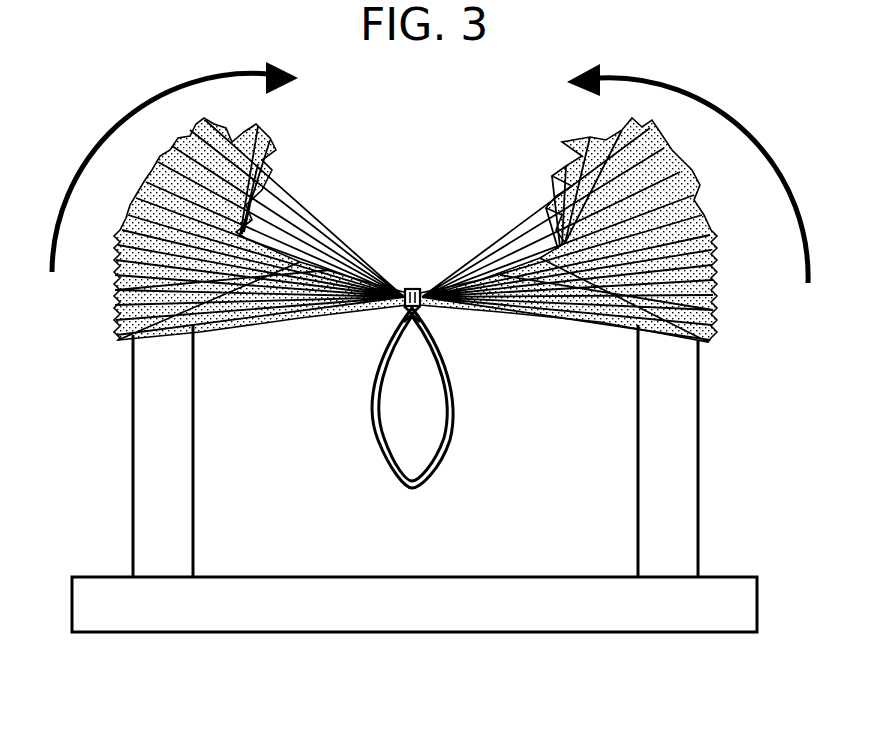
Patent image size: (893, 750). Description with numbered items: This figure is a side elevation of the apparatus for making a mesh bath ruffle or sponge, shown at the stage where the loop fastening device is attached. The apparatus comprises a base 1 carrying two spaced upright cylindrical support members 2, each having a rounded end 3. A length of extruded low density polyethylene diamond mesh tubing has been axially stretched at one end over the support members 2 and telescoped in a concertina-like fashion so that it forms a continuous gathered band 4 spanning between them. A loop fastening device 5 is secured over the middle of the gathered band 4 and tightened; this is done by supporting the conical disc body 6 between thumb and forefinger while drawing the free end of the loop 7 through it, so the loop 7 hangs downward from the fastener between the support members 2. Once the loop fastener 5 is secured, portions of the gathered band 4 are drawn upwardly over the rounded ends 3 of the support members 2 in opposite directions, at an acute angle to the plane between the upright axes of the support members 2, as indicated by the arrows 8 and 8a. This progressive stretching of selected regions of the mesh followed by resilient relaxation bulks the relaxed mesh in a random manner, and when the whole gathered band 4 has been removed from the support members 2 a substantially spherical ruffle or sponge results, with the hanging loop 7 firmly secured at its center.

The base 1 is at (550, 607).
The support member 2 is at (673, 407).
The rounded end 3 is at (143, 487).
The gathered band 4 is at (712, 287).
The loop fastening device 5 is at (416, 292).
The conical disc body 6 is at (423, 313).
The loop 7 is at (440, 450).
The arrow 8 is at (732, 110).
The arrow 8a is at (140, 104).